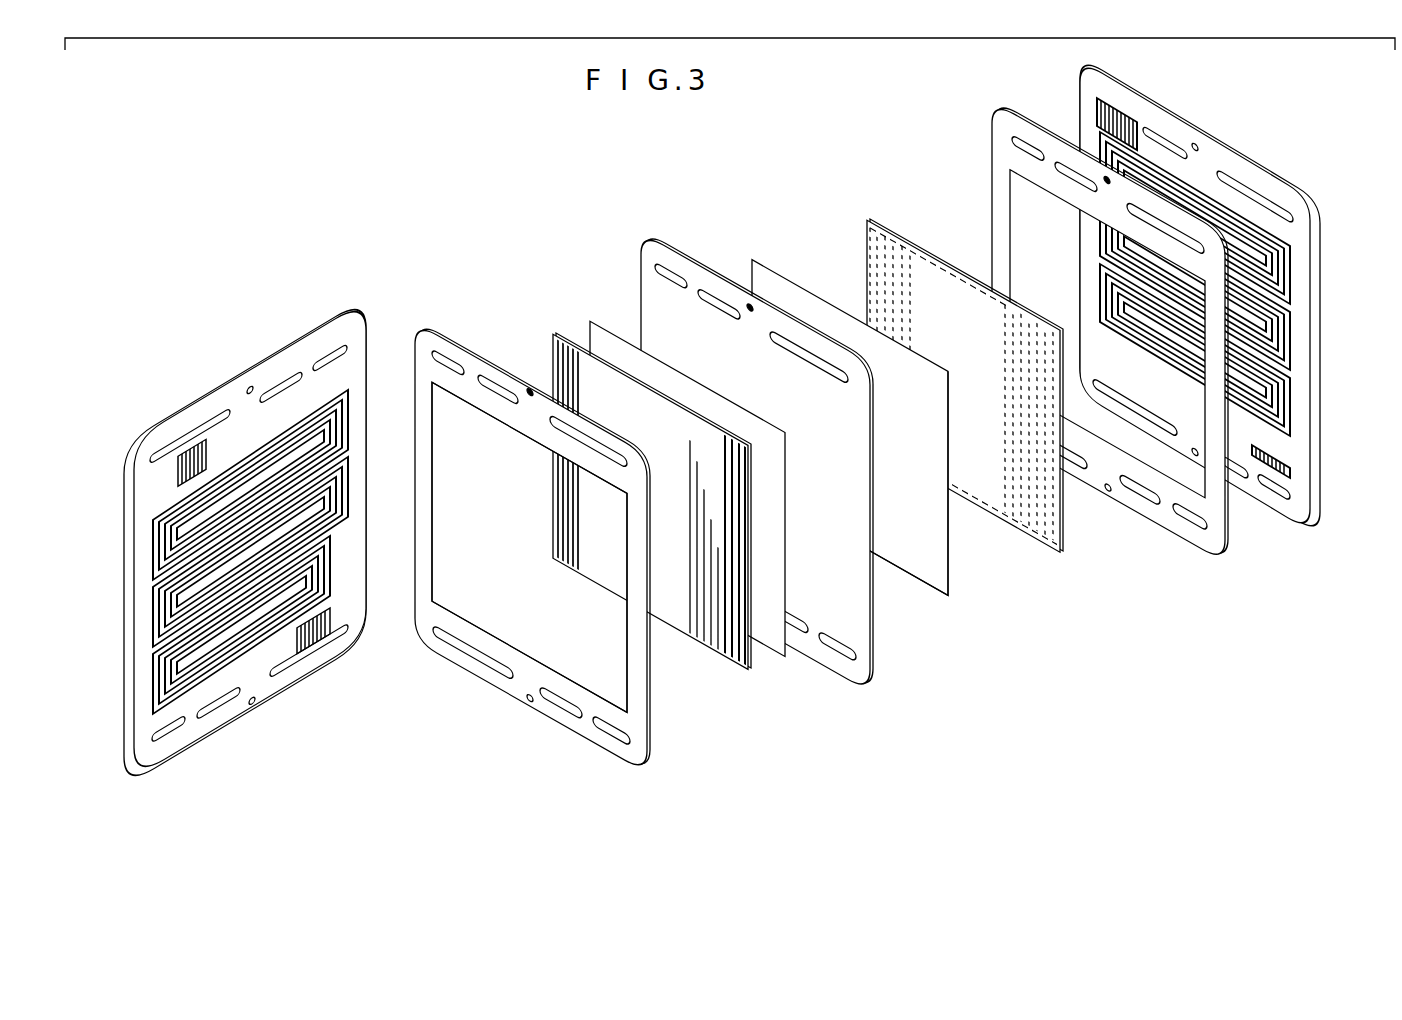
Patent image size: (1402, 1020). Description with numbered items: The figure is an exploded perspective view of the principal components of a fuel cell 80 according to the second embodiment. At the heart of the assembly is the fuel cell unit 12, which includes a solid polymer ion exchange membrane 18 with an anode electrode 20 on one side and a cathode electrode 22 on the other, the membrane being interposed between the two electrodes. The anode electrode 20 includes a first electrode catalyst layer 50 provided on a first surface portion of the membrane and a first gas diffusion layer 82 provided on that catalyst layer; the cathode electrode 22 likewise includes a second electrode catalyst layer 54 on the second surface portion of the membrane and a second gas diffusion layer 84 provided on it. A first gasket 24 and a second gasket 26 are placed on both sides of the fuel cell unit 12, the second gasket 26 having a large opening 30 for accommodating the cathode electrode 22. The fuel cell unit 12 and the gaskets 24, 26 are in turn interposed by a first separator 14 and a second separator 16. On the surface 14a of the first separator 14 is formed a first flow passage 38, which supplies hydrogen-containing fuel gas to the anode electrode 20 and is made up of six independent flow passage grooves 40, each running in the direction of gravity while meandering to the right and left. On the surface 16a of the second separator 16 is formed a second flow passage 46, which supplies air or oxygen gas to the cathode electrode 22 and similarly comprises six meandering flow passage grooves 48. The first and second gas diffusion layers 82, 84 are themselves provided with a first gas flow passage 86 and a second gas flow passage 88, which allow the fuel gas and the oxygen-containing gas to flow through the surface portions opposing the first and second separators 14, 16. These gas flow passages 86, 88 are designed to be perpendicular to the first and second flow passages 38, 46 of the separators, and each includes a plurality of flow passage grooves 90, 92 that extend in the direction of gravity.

The fuel cell unit 12 is at (835, 403).
The first separator 14 is at (1232, 295).
The surface of the first separator 14a is at (1300, 276).
The second separator 16 is at (245, 542).
The surface of the second separator 16a is at (360, 430).
The solid polymer ion exchange membrane 18 is at (722, 266).
The anode electrode 20 is at (850, 410).
The cathode electrode 22 is at (659, 482).
The first gasket 24 is at (987, 159).
The second gasket 26 is at (532, 512).
The opening 30 is at (497, 560).
The first flow passage 38 is at (1302, 357).
The flow passage grooves 40 is at (1290, 410).
The second flow passage 46 is at (148, 580).
The flow passage grooves 48 is at (340, 545).
The first electrode catalyst layer 50 is at (918, 565).
The second electrode catalyst layer 54 is at (770, 483).
The fuel cell 80 is at (942, 359).
The first gas diffusion layer 82 is at (1000, 394).
The second gas diffusion layer 84 is at (683, 615).
The first gas flow passage 86 is at (1063, 530).
The second gas flow passage 88 is at (737, 614).
The flow passage grooves 90 is at (1020, 513).
The flow passage grooves 92 is at (575, 548).